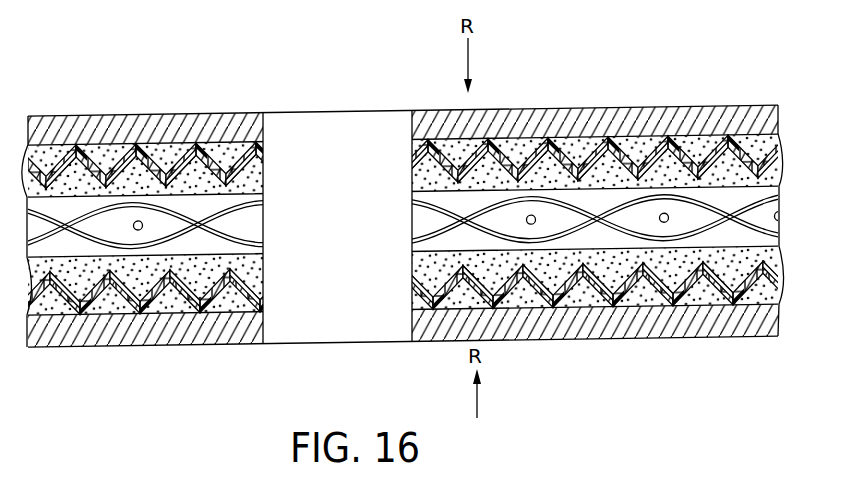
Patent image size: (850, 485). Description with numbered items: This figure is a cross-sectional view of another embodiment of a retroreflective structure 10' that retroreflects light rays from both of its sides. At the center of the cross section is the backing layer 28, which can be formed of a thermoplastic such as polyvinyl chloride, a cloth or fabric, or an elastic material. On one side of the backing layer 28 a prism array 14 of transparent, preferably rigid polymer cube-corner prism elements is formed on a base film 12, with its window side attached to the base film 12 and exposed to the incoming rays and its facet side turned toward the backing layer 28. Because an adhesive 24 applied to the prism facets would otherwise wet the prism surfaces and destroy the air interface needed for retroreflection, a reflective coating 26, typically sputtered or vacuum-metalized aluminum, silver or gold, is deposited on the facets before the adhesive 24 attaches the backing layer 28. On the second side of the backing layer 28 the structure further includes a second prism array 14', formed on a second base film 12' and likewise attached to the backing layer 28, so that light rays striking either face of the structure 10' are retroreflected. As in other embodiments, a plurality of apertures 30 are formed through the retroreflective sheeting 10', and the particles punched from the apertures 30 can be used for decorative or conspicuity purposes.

The retroreflective structure 10' is at (403, 192).
The base film 12 is at (403, 102).
The base film 12' is at (403, 347).
The prism array 14 is at (158, 131).
The second prism array 14' is at (160, 328).
The adhesive 24 is at (785, 170).
The reflective coating 26 is at (420, 147).
The backing layer 28 is at (785, 207).
The apertures 30 is at (313, 118).